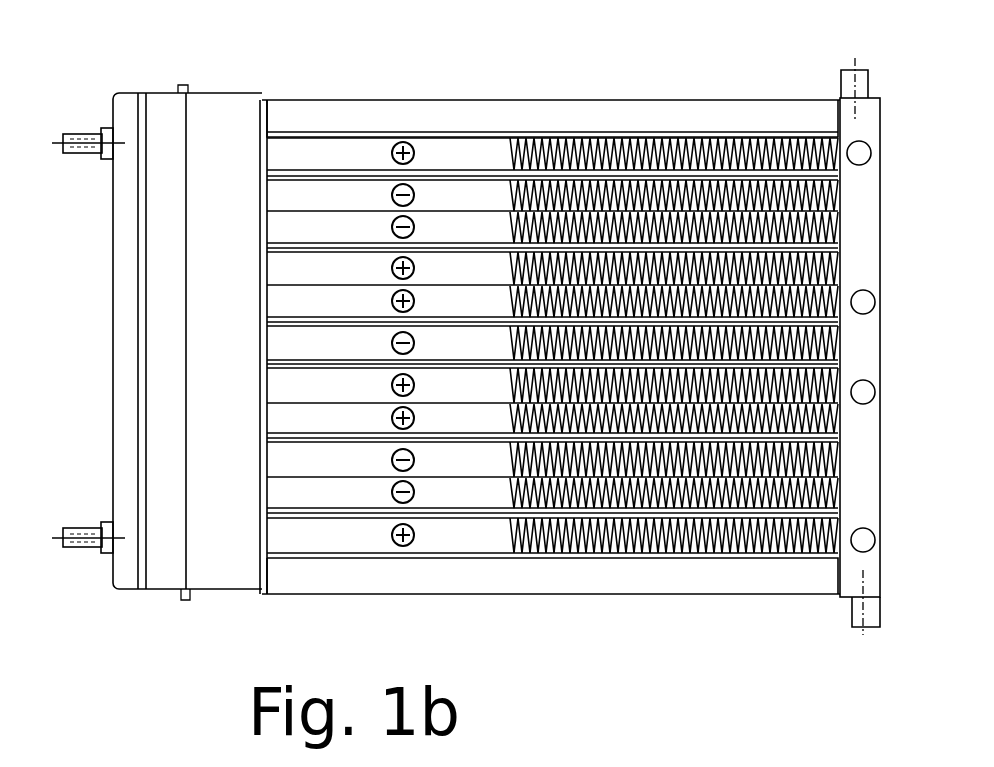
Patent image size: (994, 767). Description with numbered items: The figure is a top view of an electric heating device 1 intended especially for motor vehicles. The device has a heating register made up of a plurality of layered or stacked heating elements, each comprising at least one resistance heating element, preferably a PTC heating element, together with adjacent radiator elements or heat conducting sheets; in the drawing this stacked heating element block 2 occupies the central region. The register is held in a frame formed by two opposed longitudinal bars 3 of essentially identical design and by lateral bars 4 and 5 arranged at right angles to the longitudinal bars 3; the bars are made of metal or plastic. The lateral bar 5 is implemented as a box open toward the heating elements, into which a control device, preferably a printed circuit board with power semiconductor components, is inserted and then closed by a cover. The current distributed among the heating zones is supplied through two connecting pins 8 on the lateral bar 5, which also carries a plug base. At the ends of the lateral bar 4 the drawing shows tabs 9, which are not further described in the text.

The electric heating device 1 is at (774, 62).
The heating element block with PTC elements and radiator fins 2 is at (835, 158).
The longitudinal bars 3 is at (488, 103).
The lateral bar 4 is at (868, 232).
The lateral bar 5 is at (185, 229).
The connecting pins 8 is at (80, 128).
The fastening tab 9 is at (855, 70).